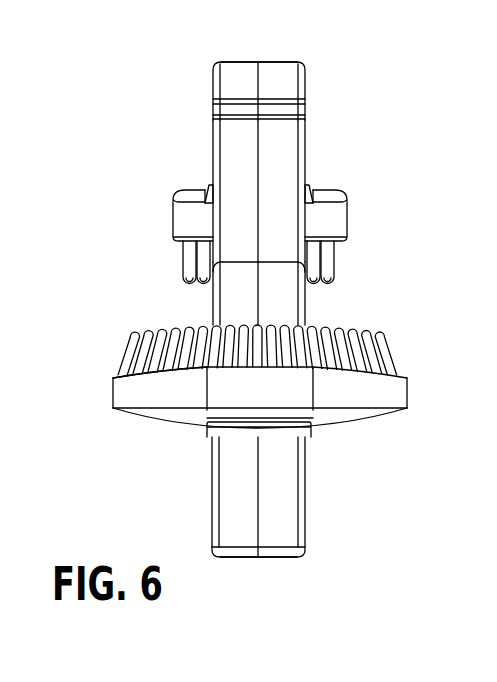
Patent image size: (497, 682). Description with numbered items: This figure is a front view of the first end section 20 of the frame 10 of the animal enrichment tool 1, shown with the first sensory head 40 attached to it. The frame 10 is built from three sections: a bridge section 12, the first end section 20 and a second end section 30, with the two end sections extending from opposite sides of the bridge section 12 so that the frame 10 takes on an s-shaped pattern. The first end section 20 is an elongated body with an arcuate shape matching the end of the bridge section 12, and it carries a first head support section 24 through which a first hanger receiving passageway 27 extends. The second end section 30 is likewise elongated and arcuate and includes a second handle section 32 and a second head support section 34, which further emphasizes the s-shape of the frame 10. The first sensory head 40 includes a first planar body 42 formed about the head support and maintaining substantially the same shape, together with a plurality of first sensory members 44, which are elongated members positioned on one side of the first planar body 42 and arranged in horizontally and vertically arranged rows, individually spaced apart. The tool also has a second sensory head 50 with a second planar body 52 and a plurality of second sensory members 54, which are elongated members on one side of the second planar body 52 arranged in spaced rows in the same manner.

The animal enrichment tool 1 is at (168, 78).
The frame 10 is at (307, 302).
The bridge section 12 is at (293, 165).
The first end section 20 is at (275, 559).
The first head support section 24 is at (308, 507).
The first hanger receiving passageway 27 is at (210, 477).
The second end section 30 is at (290, 82).
The second handle section 32 is at (235, 62).
The second head support section 34 is at (207, 184).
The first sensory head 40 is at (410, 400).
The first planar body 42 is at (113, 395).
The first sensory members 44 is at (385, 352).
The second sensory head 50 is at (348, 220).
The second planar body 52 is at (175, 213).
The second sensory members 54 is at (182, 278).